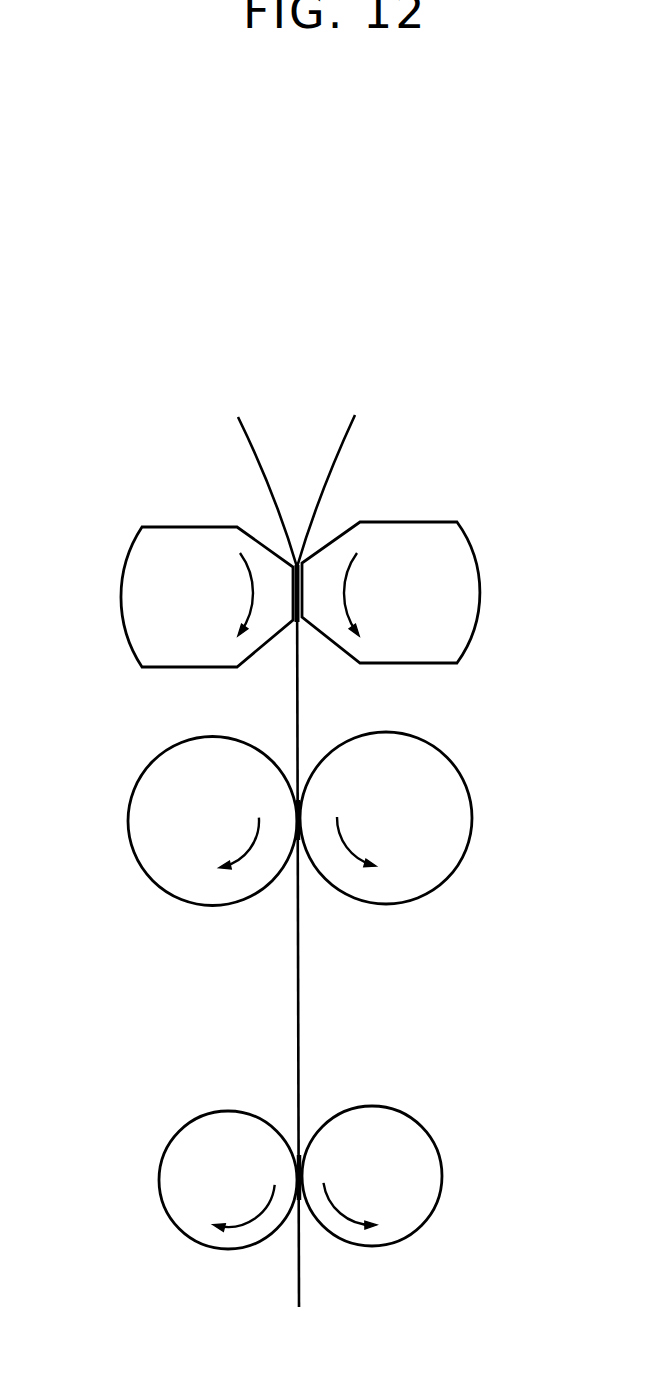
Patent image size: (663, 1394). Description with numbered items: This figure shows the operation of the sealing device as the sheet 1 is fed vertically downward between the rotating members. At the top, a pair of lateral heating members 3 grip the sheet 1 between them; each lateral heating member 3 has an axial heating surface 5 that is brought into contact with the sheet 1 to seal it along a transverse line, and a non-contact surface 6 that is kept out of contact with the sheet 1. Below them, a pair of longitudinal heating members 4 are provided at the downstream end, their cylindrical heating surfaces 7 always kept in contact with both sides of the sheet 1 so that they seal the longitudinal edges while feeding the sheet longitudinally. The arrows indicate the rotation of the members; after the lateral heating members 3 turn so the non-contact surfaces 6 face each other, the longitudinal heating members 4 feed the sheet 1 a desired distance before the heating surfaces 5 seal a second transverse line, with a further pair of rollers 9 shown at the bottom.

The sheet 1 is at (346, 437).
The lateral heating member 3 is at (457, 578).
The longitudinal heating member 4 is at (150, 835).
The axial heating surface 5 is at (301, 590).
The non-contact surface 6 is at (121, 598).
The cylindrical heating surface 7 is at (283, 868).
The rollers 9 is at (395, 1240).